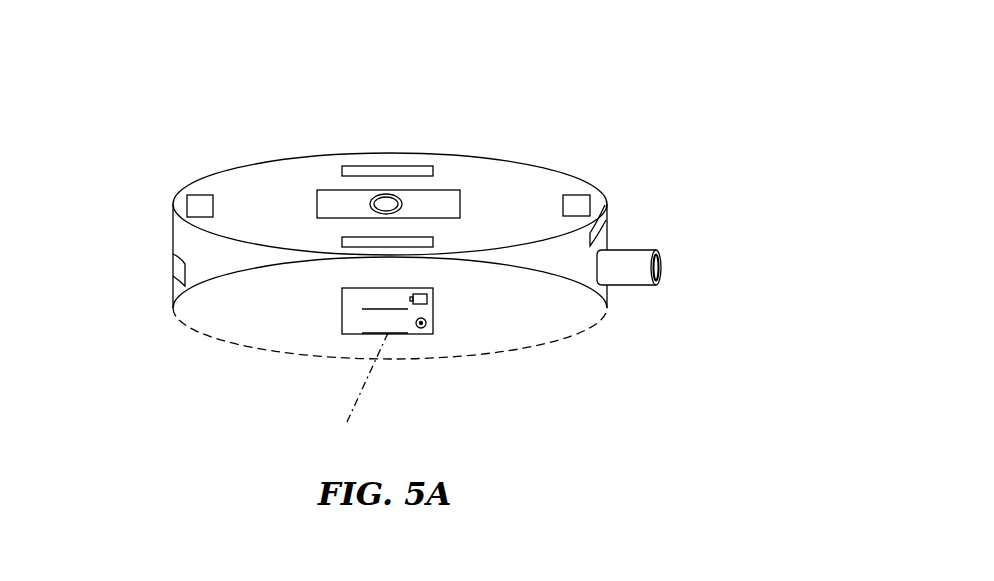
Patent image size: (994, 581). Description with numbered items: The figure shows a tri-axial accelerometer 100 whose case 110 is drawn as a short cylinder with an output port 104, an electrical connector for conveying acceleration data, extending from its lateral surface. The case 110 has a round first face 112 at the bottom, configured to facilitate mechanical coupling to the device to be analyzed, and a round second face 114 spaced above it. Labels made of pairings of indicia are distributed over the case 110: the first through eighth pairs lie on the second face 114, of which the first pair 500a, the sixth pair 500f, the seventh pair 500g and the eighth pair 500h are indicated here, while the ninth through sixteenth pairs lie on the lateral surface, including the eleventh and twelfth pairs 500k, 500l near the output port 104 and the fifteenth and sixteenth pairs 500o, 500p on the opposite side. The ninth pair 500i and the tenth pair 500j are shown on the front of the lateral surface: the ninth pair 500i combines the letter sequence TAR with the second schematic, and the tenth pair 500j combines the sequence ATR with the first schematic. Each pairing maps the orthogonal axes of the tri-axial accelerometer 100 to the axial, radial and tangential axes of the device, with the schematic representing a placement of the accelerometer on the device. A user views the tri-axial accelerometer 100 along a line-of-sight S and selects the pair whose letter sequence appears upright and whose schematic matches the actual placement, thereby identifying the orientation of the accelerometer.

The tri-axial accelerometer 100 is at (703, 116).
The output port 104 is at (645, 287).
The case 110 is at (233, 168).
The first face 112 is at (210, 321).
The second face 114 is at (290, 172).
The first pair 500a is at (386, 165).
The sixth pair 500f is at (185, 194).
The seventh pair 500g is at (445, 242).
The eighth pair 500h is at (580, 192).
The ninth pair 500i is at (436, 296).
The tenth pair 500j is at (357, 323).
The eleventh pair 500k is at (653, 214).
The twelfth pair 500l is at (608, 225).
The fifteenth pair 500o is at (116, 252).
The sixteenth pair 500p is at (172, 267).
The line-of-sight S is at (345, 428).